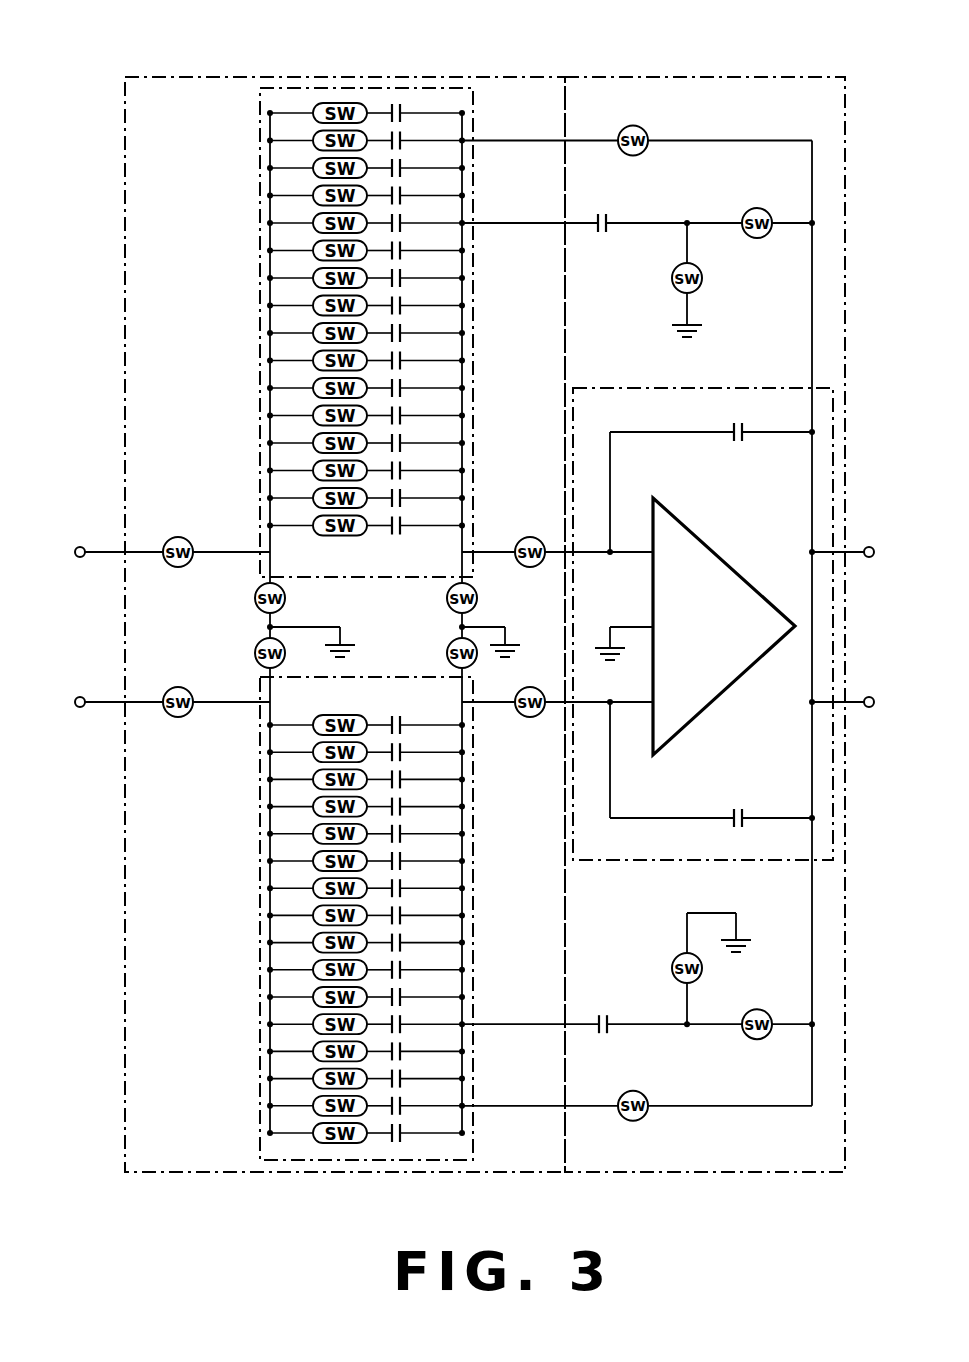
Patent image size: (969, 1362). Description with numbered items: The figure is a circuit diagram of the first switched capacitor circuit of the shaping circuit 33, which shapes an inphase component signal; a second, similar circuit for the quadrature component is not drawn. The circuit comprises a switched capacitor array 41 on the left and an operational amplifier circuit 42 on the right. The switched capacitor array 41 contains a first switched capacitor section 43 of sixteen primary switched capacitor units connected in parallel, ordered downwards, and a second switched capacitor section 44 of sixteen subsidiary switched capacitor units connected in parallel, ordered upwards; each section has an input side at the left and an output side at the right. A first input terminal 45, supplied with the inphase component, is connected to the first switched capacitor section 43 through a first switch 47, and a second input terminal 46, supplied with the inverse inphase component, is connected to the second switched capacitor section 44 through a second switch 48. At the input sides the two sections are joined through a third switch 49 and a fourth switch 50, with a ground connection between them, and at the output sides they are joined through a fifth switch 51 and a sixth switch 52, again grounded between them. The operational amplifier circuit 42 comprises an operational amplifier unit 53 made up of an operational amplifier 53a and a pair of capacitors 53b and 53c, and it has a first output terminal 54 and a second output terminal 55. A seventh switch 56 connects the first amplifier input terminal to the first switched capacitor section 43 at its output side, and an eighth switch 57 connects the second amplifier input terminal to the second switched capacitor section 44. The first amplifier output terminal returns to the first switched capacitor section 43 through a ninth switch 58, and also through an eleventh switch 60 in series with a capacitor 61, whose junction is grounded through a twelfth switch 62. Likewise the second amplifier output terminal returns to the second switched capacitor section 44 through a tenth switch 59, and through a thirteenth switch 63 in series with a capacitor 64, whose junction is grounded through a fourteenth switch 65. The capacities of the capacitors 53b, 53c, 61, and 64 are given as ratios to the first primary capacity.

The shaping circuit 33 is at (388, 70).
The switched capacitor array 41 is at (125, 277).
The operational amplifier circuit 42 is at (635, 77).
The first switched capacitor section 43 is at (475, 130).
The second switched capacitor section 44 is at (473, 910).
The first input terminal 45 is at (80, 560).
The second input terminal 46 is at (80, 710).
The first switch 47 is at (180, 537).
The second switch 48 is at (180, 717).
The third switch 49 is at (255, 598).
The fourth switch 50 is at (255, 653).
The fifth switch 51 is at (447, 598).
The sixth switch 52 is at (447, 653).
The operational amplifier unit 53 is at (703, 605).
The operational amplifier 53a is at (760, 597).
The capacitor 53b is at (735, 445).
The capacitor 53c is at (735, 812).
The first output terminal 54 is at (869, 560).
The second output terminal 55 is at (869, 695).
The seventh switch 56 is at (530, 537).
The eighth switch 57 is at (530, 717).
The ninth switch 58 is at (621, 129).
The tenth switch 59 is at (648, 1097).
The eleventh switch 60 is at (757, 208).
The capacitor 61 is at (598, 233).
The twelfth switch 62 is at (702, 280).
The thirteenth switch 63 is at (768, 1008).
The capacitor 64 is at (600, 1034).
The fourteenth switch 65 is at (674, 958).